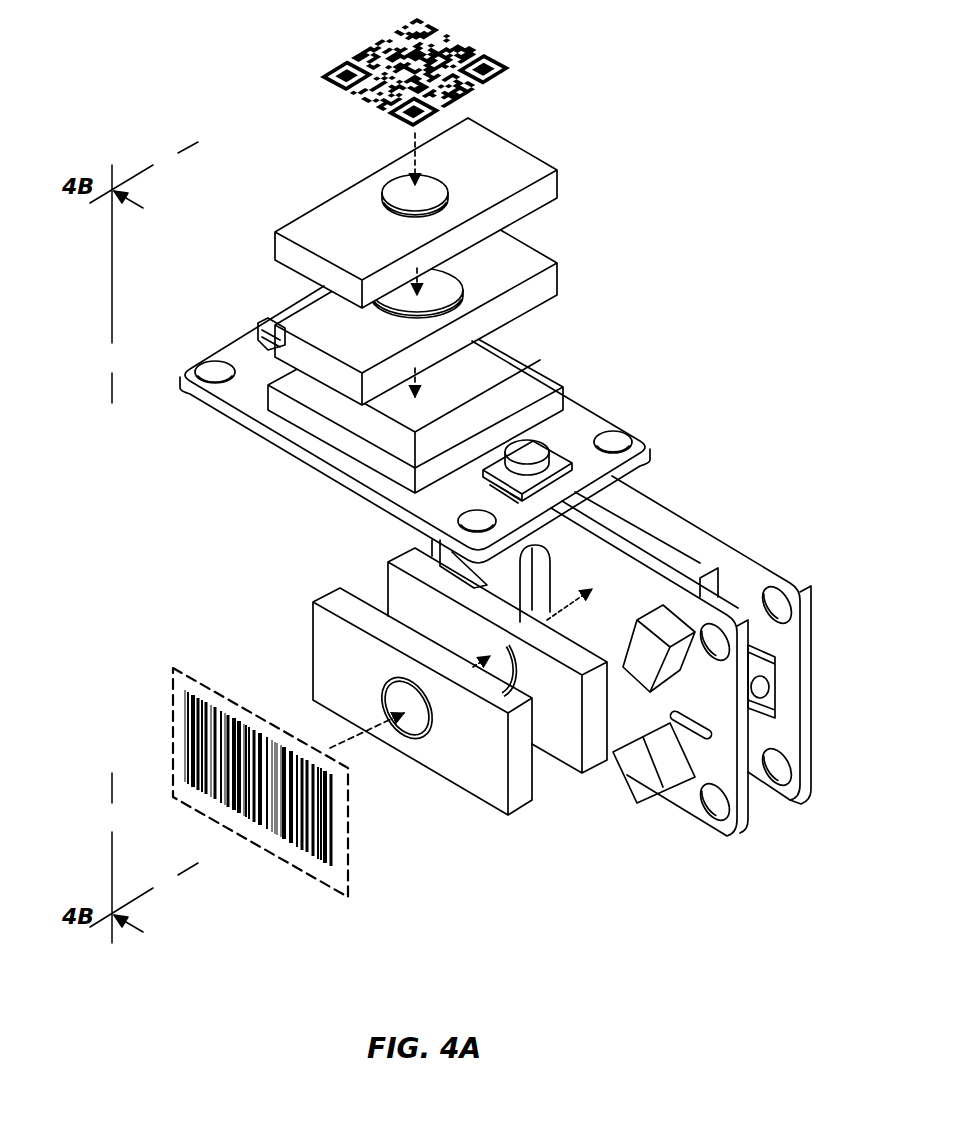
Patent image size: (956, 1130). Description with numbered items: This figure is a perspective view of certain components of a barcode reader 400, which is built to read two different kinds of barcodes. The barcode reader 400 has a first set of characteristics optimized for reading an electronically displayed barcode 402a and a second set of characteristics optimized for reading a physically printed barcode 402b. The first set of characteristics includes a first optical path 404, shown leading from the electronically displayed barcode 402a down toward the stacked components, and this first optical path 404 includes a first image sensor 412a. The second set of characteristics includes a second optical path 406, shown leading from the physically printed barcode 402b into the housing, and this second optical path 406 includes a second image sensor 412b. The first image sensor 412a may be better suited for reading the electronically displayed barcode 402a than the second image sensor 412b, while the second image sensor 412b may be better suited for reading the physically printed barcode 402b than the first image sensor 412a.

The barcode reader 400 is at (706, 197).
The electronically displayed barcode 402a is at (437, 36).
The physically printed barcode 402b is at (197, 738).
The first optical path 404 is at (413, 164).
The second optical path 406 is at (350, 750).
The first image sensor 412a is at (490, 372).
The second image sensor 412b is at (677, 556).